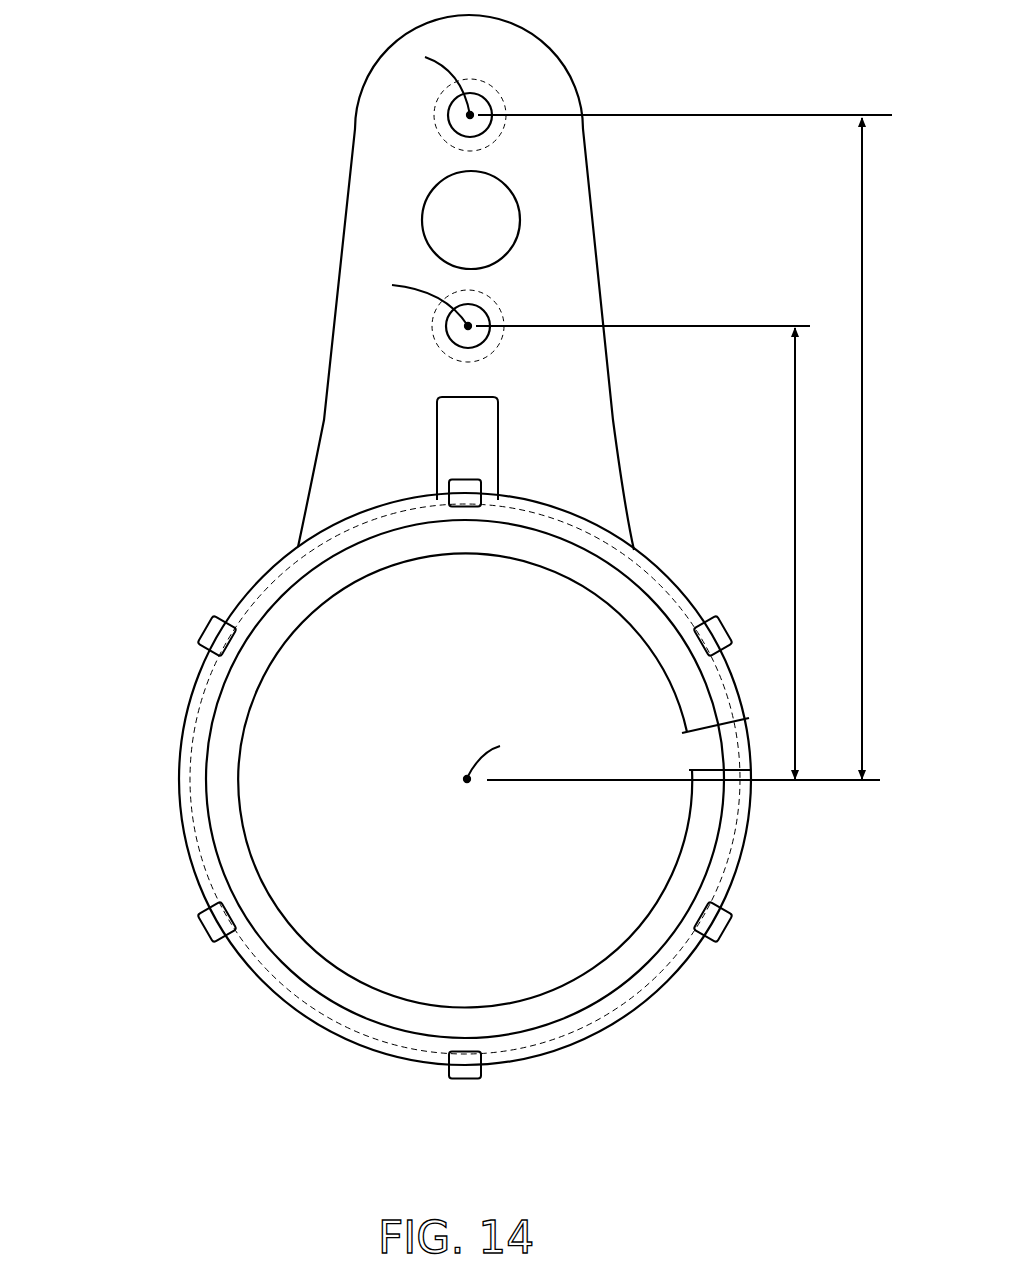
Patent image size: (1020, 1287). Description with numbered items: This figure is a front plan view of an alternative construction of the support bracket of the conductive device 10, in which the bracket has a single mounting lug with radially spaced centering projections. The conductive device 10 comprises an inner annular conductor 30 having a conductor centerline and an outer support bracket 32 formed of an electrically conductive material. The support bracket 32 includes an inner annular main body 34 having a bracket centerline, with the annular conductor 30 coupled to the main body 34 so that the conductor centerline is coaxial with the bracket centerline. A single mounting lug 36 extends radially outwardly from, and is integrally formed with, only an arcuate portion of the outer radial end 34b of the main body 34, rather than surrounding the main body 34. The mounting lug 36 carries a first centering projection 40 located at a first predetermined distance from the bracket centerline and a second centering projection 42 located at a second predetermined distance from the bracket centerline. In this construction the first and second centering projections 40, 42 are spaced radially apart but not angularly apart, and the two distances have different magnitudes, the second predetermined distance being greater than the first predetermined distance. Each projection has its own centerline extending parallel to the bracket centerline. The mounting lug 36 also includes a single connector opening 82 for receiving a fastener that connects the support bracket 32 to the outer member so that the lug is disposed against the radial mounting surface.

The conductive device 10 is at (145, 310).
The annular conductor 30 is at (165, 718).
The support bracket 32 is at (408, 282).
The annular main body 34 is at (722, 746).
The outer radial end 34b is at (746, 733).
The mounting lug 36 is at (353, 160).
The first centering projection 40 is at (490, 312).
The second centering projection 42 is at (487, 93).
The connector opening 82 is at (505, 212).